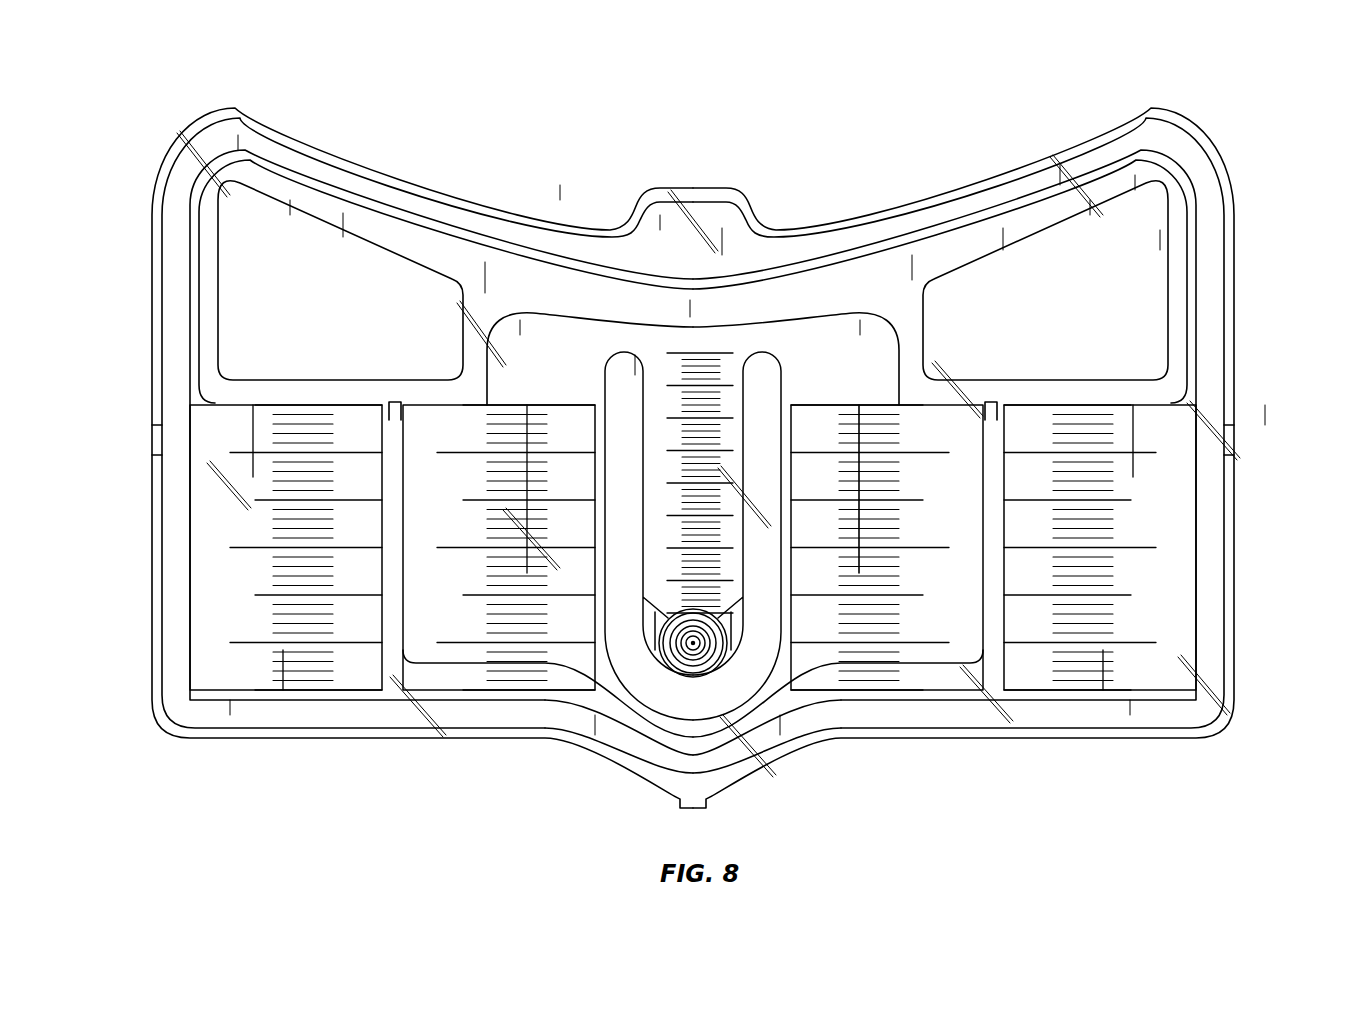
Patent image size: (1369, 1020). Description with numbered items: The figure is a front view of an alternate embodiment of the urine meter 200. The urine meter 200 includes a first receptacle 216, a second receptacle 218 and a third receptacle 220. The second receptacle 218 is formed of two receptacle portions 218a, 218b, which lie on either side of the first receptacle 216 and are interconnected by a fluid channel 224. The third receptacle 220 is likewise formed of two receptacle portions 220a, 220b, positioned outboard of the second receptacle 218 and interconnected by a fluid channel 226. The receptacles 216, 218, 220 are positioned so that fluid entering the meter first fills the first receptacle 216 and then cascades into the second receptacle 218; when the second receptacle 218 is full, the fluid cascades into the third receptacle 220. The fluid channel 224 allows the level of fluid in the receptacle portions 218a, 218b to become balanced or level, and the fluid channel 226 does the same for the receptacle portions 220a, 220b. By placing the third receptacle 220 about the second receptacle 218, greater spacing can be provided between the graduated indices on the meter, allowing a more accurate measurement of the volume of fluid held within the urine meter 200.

The urine meter 200 is at (578, 47).
The first receptacle 216 is at (727, 403).
The second receptacle 218 is at (823, 428).
The receptacle portion 218a is at (930, 628).
The receptacle portion 218b is at (468, 620).
The third receptacle 220 is at (1130, 433).
The receptacle portion 220a is at (253, 562).
The receptacle portion 220b is at (1133, 572).
The fluid channel 224 is at (660, 716).
The fluid channel 226 is at (727, 755).